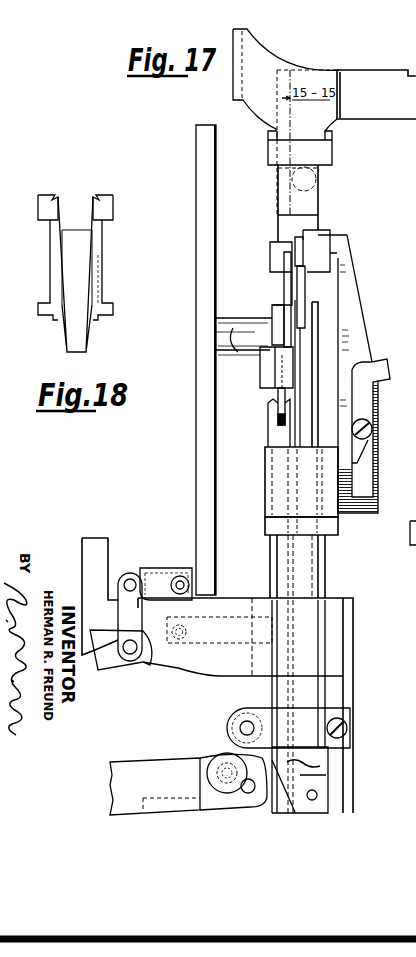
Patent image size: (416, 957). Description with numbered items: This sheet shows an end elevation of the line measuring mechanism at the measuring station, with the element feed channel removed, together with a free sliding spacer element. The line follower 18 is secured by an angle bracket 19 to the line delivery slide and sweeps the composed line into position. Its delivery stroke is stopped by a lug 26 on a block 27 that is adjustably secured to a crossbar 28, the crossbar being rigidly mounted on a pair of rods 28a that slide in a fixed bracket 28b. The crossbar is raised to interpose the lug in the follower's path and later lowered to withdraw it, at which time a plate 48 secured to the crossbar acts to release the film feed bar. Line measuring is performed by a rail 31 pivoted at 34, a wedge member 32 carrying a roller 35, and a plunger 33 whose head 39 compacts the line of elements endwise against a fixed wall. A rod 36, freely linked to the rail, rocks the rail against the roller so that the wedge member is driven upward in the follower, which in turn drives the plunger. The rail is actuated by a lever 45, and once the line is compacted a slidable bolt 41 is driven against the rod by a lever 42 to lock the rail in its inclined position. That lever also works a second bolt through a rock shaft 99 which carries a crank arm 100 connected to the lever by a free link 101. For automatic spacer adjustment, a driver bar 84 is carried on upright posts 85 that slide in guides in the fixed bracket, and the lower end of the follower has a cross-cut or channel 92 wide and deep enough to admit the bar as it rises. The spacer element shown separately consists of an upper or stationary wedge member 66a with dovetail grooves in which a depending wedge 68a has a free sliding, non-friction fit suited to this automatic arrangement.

In FIG. 17, the angle bracket 19 is at (268, 98).
In FIG. 17, the line follower 18 is at (316, 140).
In FIG. 17, the plunger 33 is at (318, 179).
In FIG. 17, the head 39 is at (312, 200).
In FIG. 17, the lug 26 is at (325, 235).
In FIG. 17, the cross-cut or channel 92 is at (298, 246).
In FIG. 17, the wedge member 32 is at (284, 290).
In FIG. 17, the driver bar 84 is at (305, 286).
In FIG. 17, the roller 35 is at (280, 330).
In FIG. 17, the upright posts 85 is at (318, 306).
In FIG. 17, the block 27 is at (365, 343).
In FIG. 17, the pivot 34 is at (238, 340).
In FIG. 17, the rail 31 is at (273, 360).
In FIG. 17, the rod 36 is at (268, 421).
In FIG. 17, the crossbar 28 is at (265, 491).
In FIG. 17, the plate 48 is at (265, 530).
In FIG. 17, the rods 28a is at (326, 574).
In FIG. 17, the fixed bracket 28b is at (345, 634).
In FIG. 17, the rock shaft 99 is at (181, 577).
In FIG. 17, the crank arm 100 is at (163, 559).
In FIG. 17, the free link 101 is at (119, 612).
In FIG. 17, the slidable bolt 41 is at (228, 645).
In FIG. 17, the lever 42 is at (110, 665).
In FIG. 17, the lever 45 is at (158, 768).
In FIG. 18, the upper or stationary wedge member 66a is at (103, 272).
In FIG. 18, the depending wedge 68a is at (85, 342).